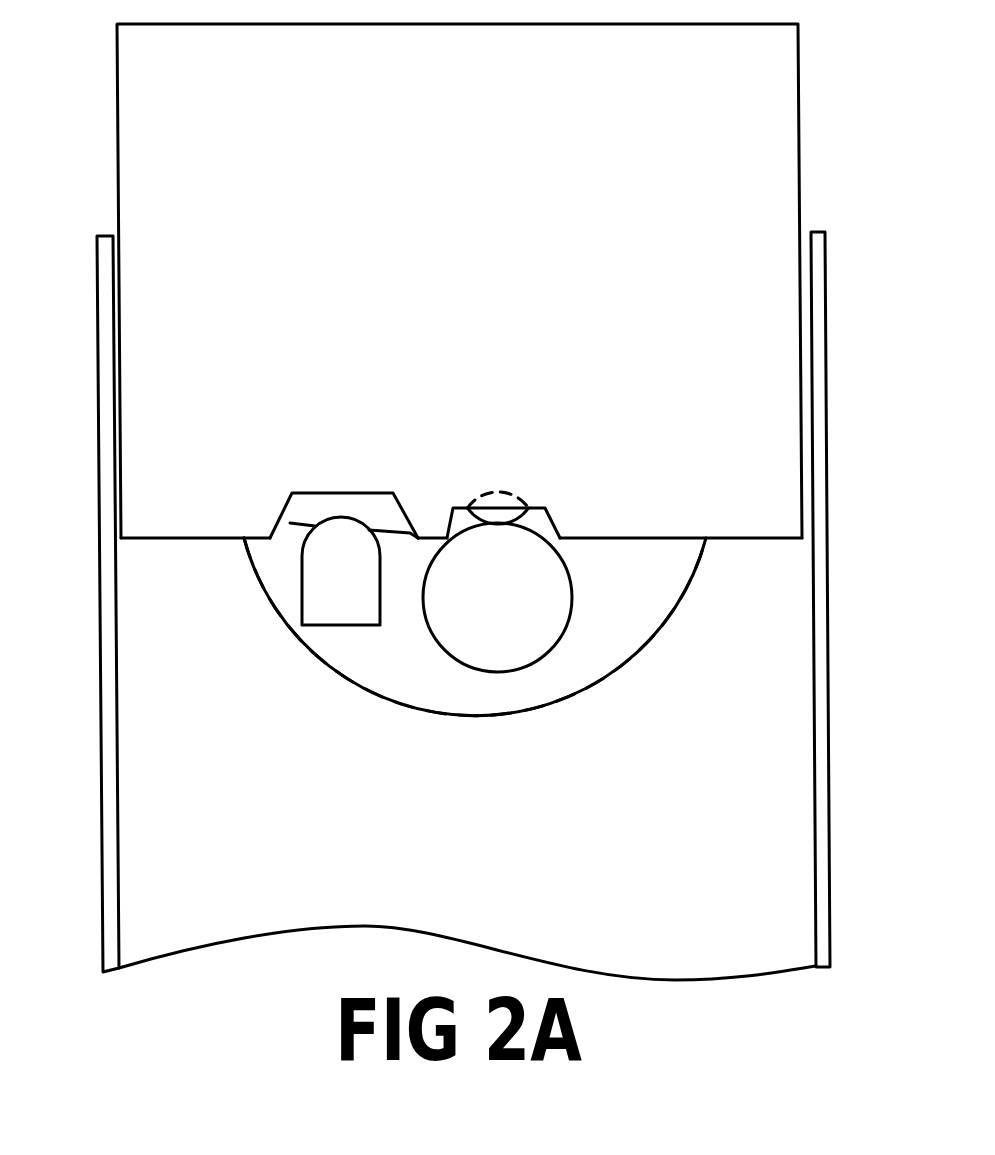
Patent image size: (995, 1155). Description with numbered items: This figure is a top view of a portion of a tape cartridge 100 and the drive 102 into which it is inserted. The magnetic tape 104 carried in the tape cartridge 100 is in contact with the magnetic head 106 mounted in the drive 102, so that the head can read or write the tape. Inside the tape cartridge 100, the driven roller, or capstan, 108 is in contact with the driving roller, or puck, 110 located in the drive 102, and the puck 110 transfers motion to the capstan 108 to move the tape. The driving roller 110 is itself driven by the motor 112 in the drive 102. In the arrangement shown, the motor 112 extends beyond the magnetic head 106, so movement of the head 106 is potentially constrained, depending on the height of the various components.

The tape cartridge 100 is at (760, 24).
The drive 102 is at (100, 588).
The magnetic tape 104 is at (287, 513).
The magnetic head 106 is at (330, 625).
The driven roller (capstan) 108 is at (524, 519).
The driving roller (puck) 110 is at (533, 660).
The motor 112 is at (540, 830).